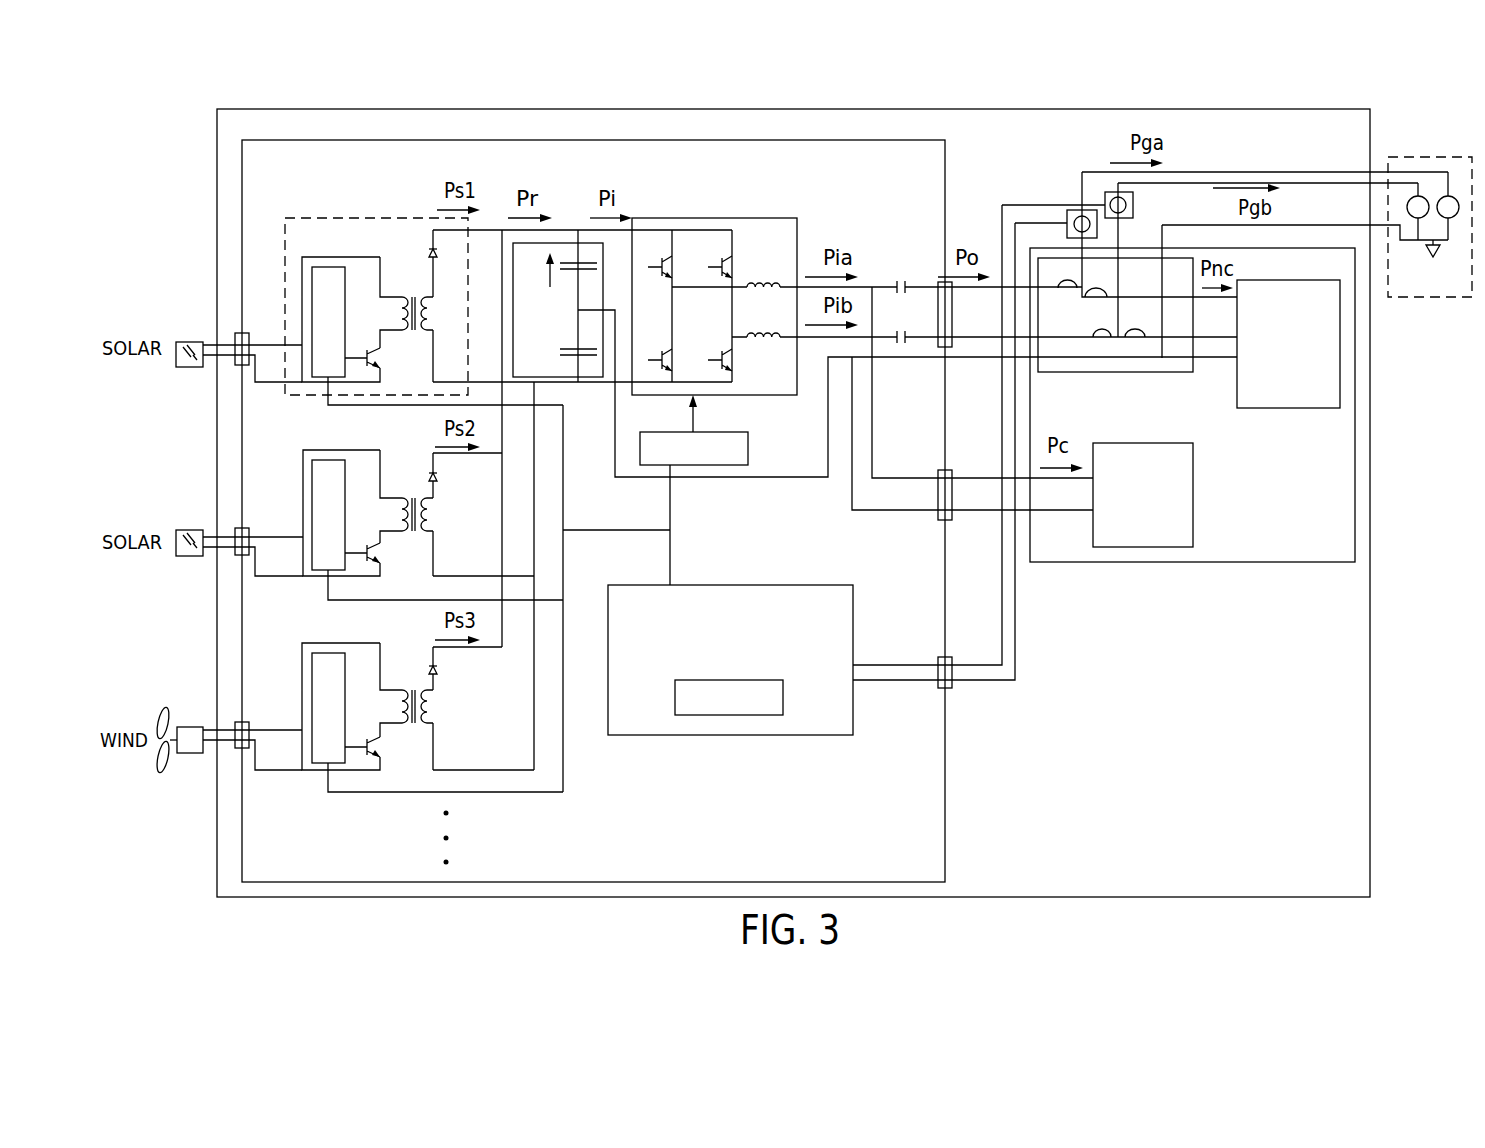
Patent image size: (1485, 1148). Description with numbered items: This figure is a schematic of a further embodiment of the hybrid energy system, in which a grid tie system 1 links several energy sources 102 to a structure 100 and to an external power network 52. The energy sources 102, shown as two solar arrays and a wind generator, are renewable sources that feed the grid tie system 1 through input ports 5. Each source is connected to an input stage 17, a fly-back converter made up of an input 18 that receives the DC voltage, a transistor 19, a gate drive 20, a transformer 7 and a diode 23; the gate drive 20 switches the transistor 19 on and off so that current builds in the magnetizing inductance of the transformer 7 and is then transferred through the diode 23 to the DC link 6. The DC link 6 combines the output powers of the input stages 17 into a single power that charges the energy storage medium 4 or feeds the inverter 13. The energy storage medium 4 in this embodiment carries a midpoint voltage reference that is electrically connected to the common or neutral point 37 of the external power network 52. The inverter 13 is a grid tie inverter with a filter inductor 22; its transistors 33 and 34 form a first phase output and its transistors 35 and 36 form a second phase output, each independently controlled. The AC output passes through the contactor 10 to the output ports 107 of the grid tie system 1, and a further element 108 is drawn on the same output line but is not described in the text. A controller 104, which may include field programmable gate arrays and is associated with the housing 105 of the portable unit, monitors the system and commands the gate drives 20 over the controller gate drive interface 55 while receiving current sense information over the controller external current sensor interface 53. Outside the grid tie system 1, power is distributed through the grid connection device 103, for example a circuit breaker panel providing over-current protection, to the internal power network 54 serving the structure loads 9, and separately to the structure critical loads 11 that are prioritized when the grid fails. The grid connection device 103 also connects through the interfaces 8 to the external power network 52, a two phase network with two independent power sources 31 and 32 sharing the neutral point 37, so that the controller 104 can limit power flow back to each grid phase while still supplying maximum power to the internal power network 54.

The structure 100 is at (780, 108).
The grid tie system 1 is at (948, 800).
The input stage 17 is at (333, 217).
The gate drive 20 is at (312, 270).
The input 18 is at (272, 343).
The energy source 102 is at (190, 342).
The input port 5 is at (235, 358).
The transistor 19 is at (372, 352).
The transformer 7 is at (415, 332).
The diode 23 is at (430, 250).
The DC link 6 is at (502, 222).
The energy storage medium 4 is at (568, 227).
The inverter 13 is at (713, 217).
The transistor 33 is at (653, 255).
The transistor 34 is at (653, 348).
The transistor 35 is at (713, 255).
The transistor 36 is at (713, 348).
The filter inductor 22 is at (767, 270).
The contactor 10 is at (902, 280).
The output port 107 is at (937, 313).
The sensor 108 is at (952, 675).
The controller gate drive interface 55 is at (672, 505).
The controller 104 is at (820, 585).
The housing 105 is at (763, 717).
The controller external current sensor interface 53 is at (1015, 637).
The interface 8 is at (1333, 170).
The power source 31 is at (1405, 204).
The power source 32 is at (1455, 195).
The neutral point 37 is at (1405, 282).
The external power network 52 is at (1413, 155).
The internal power network 54 is at (1215, 563).
The grid connection device 103 is at (1138, 372).
The structure loads 9 is at (1310, 410).
The structure critical loads 11 is at (1193, 515).